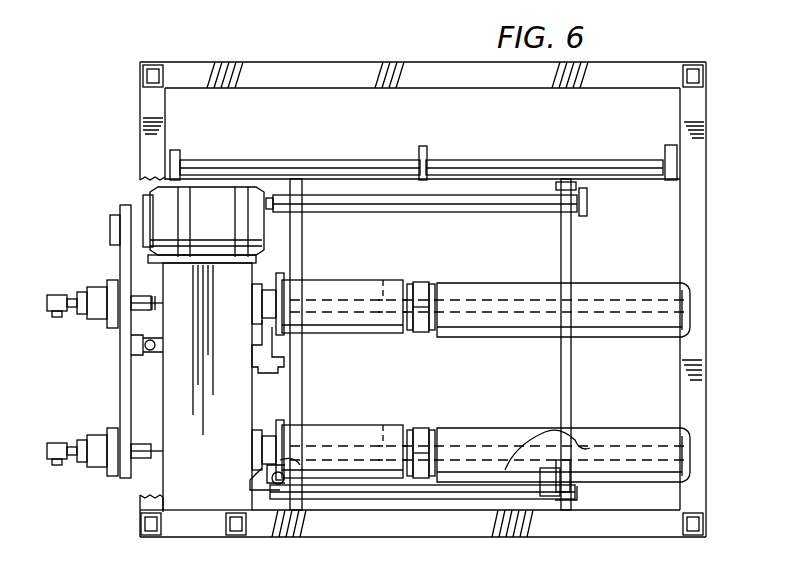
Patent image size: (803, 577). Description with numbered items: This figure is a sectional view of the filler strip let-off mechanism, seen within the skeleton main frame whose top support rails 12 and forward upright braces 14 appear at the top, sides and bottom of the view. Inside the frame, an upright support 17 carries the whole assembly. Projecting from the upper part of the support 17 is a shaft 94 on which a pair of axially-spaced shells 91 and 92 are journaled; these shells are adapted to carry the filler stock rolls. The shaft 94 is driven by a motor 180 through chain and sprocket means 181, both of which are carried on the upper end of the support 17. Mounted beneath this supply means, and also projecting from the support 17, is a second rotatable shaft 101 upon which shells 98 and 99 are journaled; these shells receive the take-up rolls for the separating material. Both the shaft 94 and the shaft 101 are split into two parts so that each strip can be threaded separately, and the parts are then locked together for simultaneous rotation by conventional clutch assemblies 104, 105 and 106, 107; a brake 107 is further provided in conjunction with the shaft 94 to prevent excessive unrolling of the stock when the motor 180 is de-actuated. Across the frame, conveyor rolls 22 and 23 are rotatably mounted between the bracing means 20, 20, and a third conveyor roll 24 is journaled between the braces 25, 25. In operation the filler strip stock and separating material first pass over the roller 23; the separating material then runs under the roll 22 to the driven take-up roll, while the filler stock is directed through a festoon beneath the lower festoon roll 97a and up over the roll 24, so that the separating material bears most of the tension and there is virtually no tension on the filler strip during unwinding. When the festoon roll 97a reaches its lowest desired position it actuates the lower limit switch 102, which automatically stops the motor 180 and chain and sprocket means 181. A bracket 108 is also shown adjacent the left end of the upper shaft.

The top support rail 12 is at (140, 70).
The forward upright brace 14 is at (140, 141).
The upright support 17 is at (163, 382).
The bracing means 20 is at (302, 387).
The conveyor roll 22 is at (468, 503).
The conveyor roll 23 is at (634, 175).
The third conveyor roll 24 is at (516, 210).
The brace 25 is at (588, 202).
The shell 91 is at (340, 280).
The shell 92 is at (496, 284).
The shaft 94 is at (387, 280).
The festoon roll 97a is at (532, 477).
The shell 98 is at (344, 425).
The shell 99 is at (502, 422).
The second rotatable shaft 101 is at (394, 425).
The lower limit switch 102 is at (282, 497).
The clutch assembly 104 is at (418, 284).
The clutch assembly 105 is at (106, 282).
The clutch assembly 106 is at (422, 426).
The clutch assembly 107 is at (109, 422).
The bearing bracket 108 is at (280, 352).
The motor 180 is at (203, 225).
The chain and sprocket means 181 is at (120, 236).